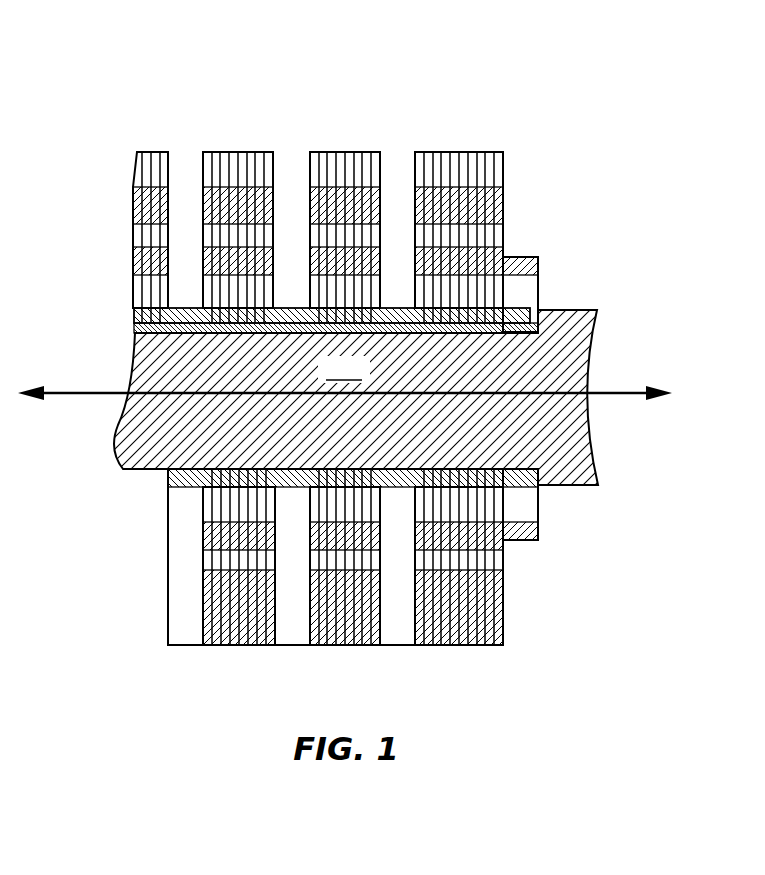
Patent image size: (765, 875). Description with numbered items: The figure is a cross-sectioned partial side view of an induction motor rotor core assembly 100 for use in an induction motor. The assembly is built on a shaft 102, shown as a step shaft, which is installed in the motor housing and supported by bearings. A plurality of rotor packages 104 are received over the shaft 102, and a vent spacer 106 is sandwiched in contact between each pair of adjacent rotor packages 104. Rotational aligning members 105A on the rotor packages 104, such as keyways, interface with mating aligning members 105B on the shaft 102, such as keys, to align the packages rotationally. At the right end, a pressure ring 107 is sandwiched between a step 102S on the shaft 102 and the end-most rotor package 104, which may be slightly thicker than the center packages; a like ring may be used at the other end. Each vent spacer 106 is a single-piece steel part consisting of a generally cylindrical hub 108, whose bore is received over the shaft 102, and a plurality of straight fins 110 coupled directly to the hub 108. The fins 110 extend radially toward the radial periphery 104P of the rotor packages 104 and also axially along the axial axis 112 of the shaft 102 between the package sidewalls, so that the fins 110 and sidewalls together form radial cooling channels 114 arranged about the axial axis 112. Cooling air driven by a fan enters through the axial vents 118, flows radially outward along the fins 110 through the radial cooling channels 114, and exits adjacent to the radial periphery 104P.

The induction motor rotor core assembly 100 is at (232, 38).
The shaft 102 is at (356, 397).
The step 102S is at (577, 310).
The rotor package 104 is at (136, 158).
The radial periphery 104P is at (487, 646).
The rotational aligning member 105A is at (118, 422).
The mating aligning member 105B is at (145, 328).
The vent spacer 106 is at (403, 232).
The pressure ring 107 is at (520, 265).
The hub 108 is at (185, 308).
The fin 110 is at (403, 503).
The axial axis 112 is at (600, 391).
The radial cooling channel 114 is at (185, 150).
The axial vent 118 is at (543, 507).